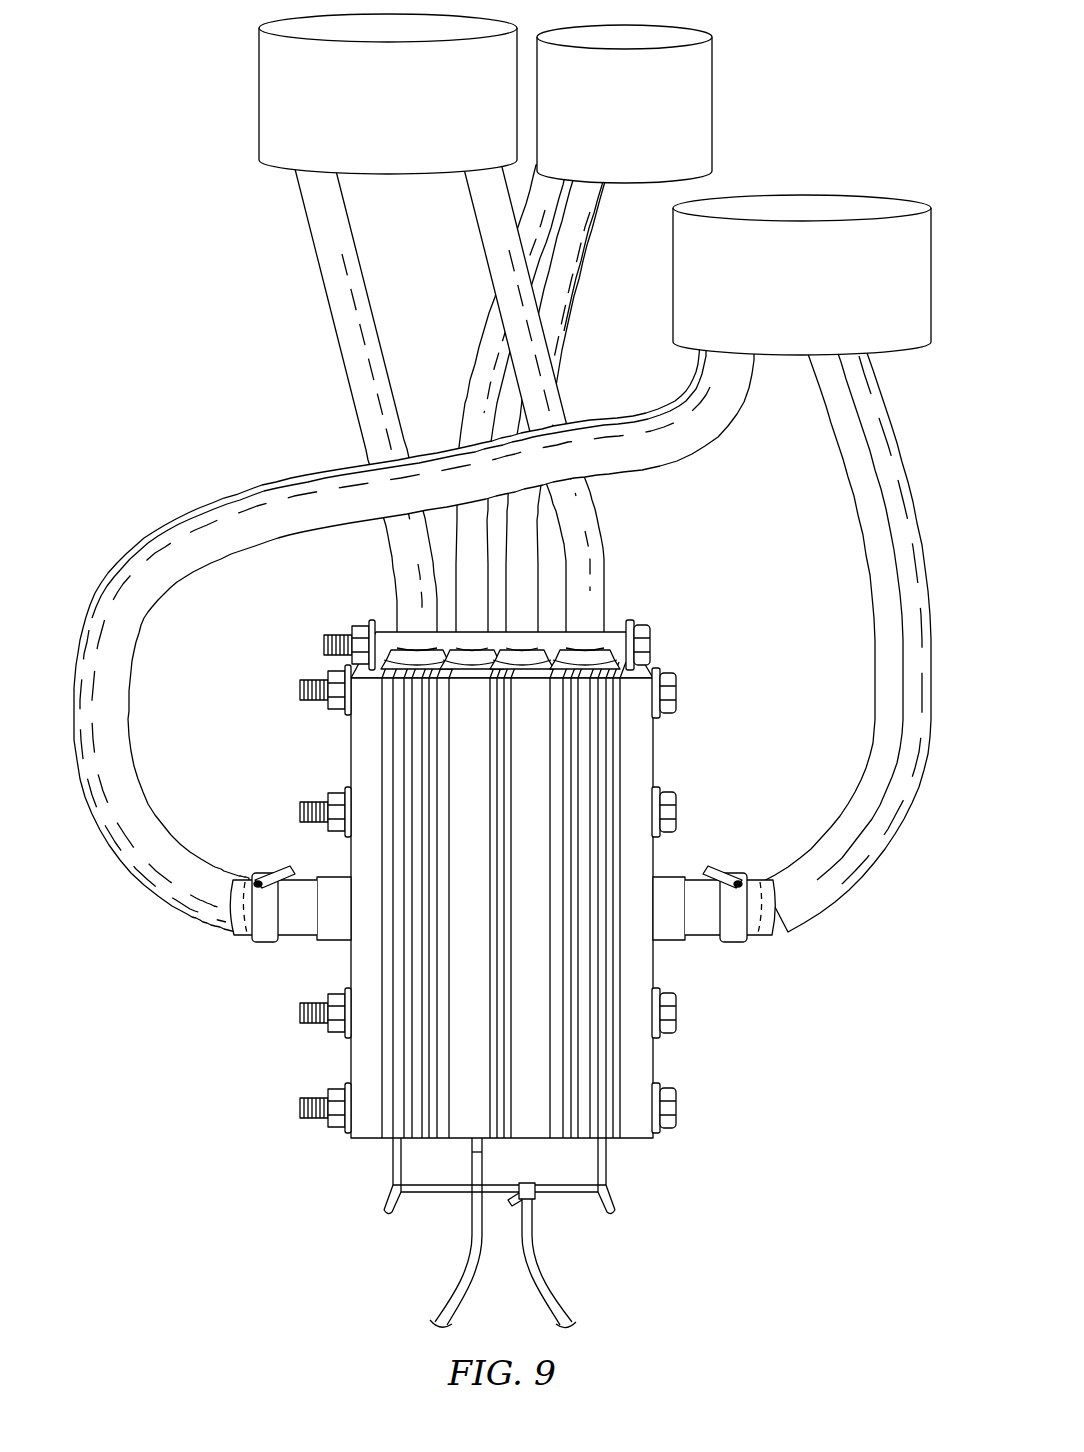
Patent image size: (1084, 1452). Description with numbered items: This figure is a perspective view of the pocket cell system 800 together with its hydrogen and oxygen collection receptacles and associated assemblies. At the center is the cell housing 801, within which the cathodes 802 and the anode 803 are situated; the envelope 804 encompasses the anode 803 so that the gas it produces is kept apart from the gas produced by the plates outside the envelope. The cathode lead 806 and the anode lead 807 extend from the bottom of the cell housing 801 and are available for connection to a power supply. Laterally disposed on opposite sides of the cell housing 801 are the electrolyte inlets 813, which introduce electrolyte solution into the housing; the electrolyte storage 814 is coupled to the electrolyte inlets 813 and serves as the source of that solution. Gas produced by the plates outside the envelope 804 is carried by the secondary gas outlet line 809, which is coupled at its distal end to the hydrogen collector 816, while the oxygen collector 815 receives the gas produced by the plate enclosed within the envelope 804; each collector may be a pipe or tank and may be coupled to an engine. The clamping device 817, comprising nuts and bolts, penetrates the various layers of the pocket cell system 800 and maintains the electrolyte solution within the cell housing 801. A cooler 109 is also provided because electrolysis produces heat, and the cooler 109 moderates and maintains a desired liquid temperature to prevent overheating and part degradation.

The pocket cell system 800 is at (676, 1241).
The cell housing 801 is at (505, 906).
The cathodes 802 is at (388, 960).
The anode 803 is at (495, 757).
The envelope 804 is at (470, 1052).
The cathode lead 806 is at (535, 1240).
The anode lead 807 is at (470, 1240).
The secondary gas outlet line 809 is at (591, 497).
The electrolyte inlets 813 is at (874, 718).
The electrolyte storage 814 is at (786, 297).
The oxygen collector 815 is at (607, 120).
The hydrogen collector 816 is at (371, 115).
The clamping device 817 is at (335, 713).
The cooler 109 is at (577, 301).